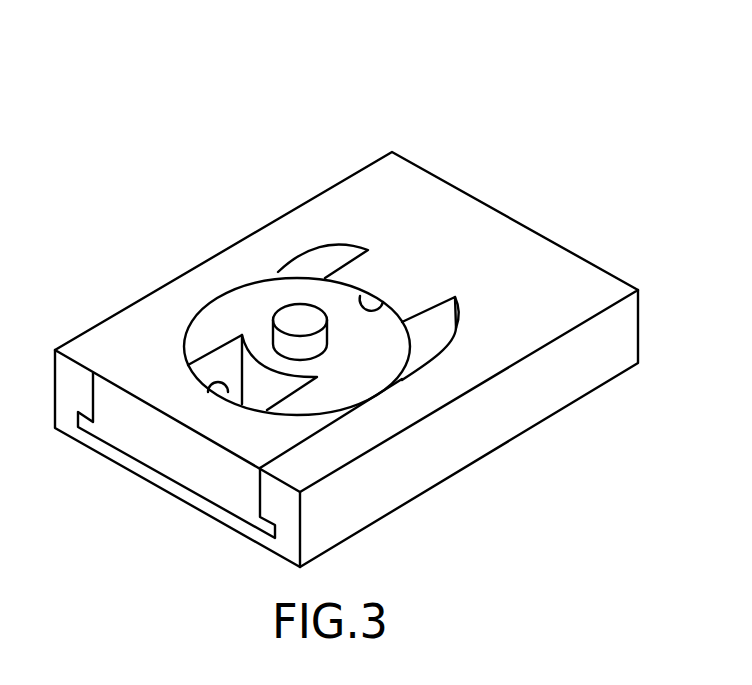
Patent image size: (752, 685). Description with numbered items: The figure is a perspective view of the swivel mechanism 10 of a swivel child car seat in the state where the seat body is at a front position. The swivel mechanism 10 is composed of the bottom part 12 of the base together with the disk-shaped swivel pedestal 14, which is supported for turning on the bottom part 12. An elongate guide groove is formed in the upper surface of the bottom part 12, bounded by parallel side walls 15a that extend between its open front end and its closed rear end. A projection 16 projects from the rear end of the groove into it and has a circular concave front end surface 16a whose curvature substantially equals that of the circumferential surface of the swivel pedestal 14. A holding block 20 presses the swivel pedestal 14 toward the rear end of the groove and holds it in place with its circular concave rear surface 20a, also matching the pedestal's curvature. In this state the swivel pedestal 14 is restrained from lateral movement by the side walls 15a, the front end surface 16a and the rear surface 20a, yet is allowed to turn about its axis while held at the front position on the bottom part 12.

The swivel mechanism 10 is at (527, 157).
The bottom part 12 is at (422, 467).
The swivel pedestal 14 is at (253, 314).
The side walls 15a is at (278, 272).
The projection 16 is at (495, 208).
The front end surface 16a is at (387, 307).
The holding block 20 is at (158, 374).
The rear surface 20a is at (227, 392).